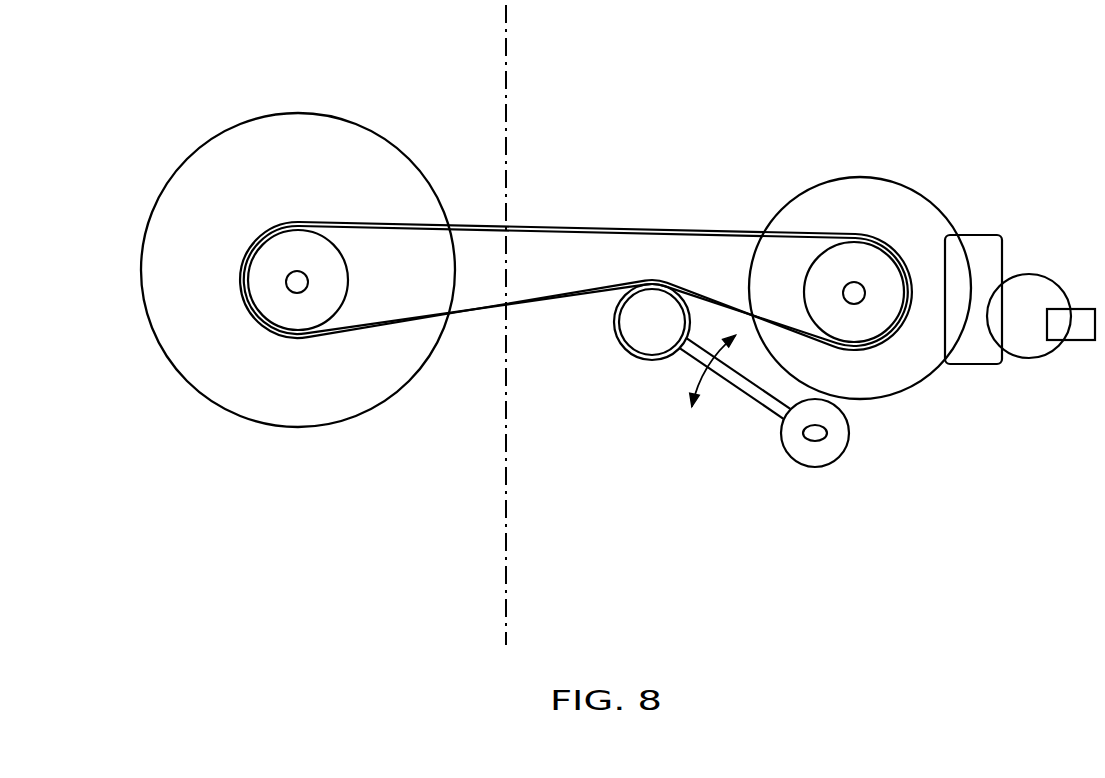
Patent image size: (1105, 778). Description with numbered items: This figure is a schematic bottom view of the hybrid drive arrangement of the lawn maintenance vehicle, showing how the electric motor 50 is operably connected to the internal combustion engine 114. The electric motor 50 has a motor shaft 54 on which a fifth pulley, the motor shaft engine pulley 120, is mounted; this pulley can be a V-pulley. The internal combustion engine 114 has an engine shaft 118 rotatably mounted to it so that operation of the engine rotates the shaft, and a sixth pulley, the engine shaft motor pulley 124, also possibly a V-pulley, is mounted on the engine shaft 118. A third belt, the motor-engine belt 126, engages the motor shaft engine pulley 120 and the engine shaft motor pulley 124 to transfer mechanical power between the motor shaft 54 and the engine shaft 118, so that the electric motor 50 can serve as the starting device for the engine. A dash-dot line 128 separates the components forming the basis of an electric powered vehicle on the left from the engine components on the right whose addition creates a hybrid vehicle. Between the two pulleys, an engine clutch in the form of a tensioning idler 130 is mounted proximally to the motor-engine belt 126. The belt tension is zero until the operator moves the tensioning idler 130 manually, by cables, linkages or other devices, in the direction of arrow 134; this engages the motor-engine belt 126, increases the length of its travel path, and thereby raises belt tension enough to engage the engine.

The electric motor 50 is at (198, 146).
The motor shaft 54 is at (295, 271).
The motor shaft engine pulley 120 is at (349, 284).
The motor-engine belt 126 is at (642, 228).
The internal combustion engine 114 is at (884, 177).
The engine shaft 118 is at (856, 282).
The engine shaft motor pulley 124 is at (803, 294).
The tensioning idler 130 is at (712, 422).
The arrow 134 is at (690, 386).
The line 128 is at (504, 594).